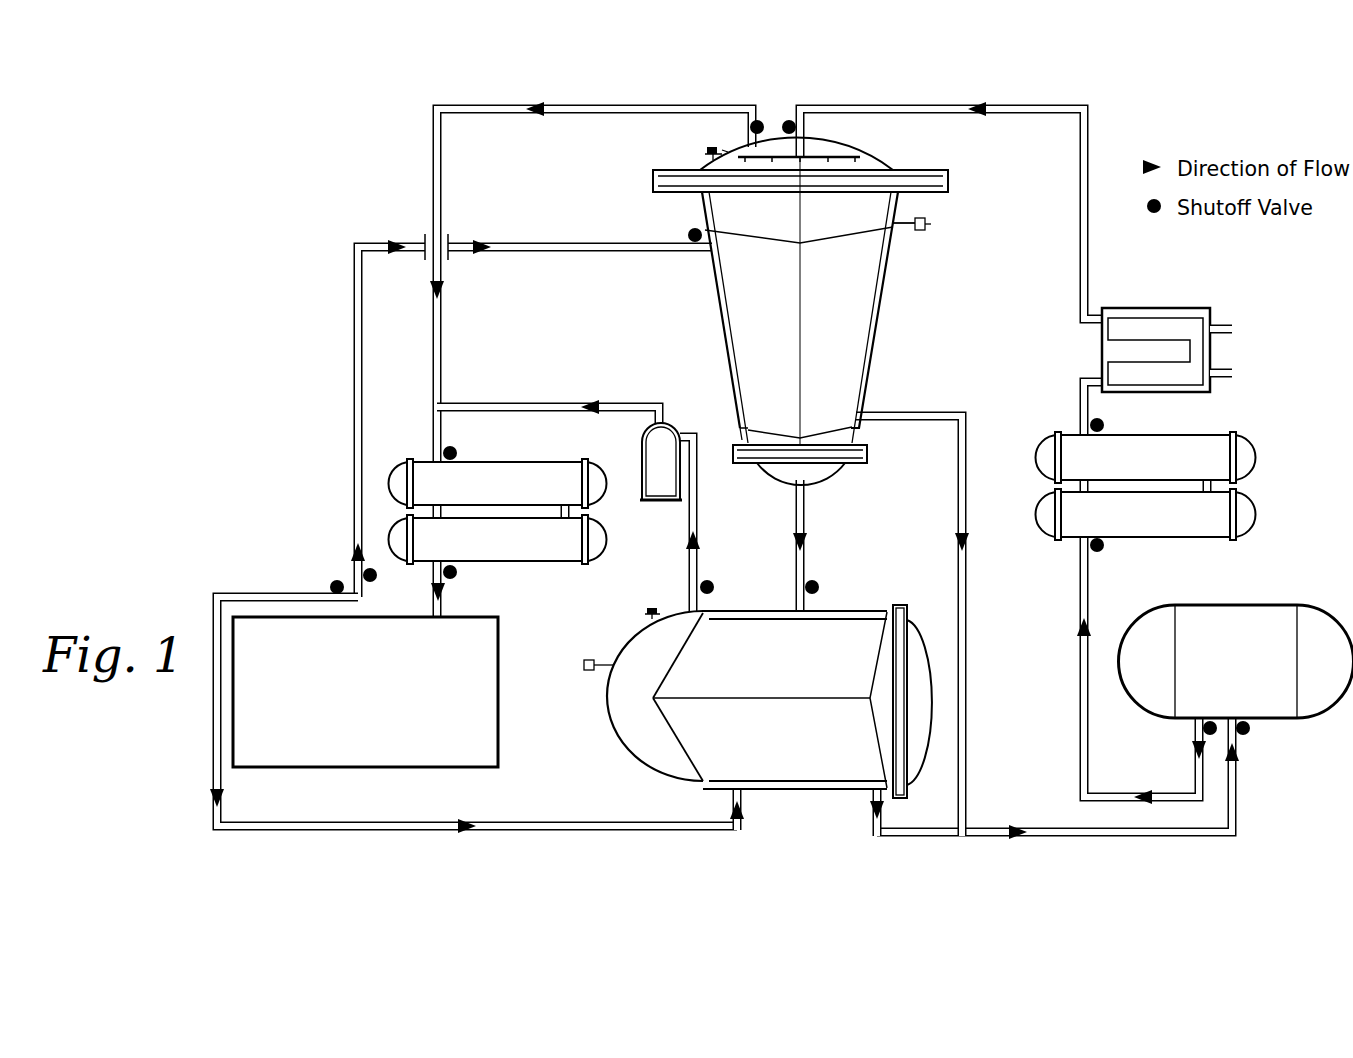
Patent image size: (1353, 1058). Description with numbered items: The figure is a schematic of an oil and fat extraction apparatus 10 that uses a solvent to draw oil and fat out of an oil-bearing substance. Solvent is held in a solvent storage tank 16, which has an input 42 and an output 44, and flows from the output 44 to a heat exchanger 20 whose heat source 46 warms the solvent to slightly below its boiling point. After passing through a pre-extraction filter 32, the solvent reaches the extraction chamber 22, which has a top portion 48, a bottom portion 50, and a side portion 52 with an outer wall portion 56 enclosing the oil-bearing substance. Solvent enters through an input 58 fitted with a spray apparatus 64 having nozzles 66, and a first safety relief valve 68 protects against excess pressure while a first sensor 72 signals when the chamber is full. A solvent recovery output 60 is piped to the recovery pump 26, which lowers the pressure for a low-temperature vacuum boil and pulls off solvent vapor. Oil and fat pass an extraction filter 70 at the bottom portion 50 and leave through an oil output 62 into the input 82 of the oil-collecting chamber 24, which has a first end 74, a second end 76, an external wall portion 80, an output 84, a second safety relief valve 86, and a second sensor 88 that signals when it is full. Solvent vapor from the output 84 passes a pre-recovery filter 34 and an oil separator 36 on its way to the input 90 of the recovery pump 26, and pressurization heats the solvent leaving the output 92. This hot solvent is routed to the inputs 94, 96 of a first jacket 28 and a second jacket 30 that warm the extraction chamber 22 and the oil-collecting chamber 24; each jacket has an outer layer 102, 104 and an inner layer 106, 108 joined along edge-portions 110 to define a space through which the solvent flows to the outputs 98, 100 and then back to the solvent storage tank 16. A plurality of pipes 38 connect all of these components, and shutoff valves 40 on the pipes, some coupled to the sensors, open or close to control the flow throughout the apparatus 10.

The oil and fat extraction apparatus 10 is at (182, 156).
The solvent storage tank 16 is at (1255, 612).
The heat exchanger 20 is at (1170, 308).
The extraction chamber 22 is at (807, 299).
The oil-collecting chamber 24 is at (760, 713).
The recovery pump 26 is at (498, 645).
The first jacket 28 is at (858, 335).
The second jacket 30 is at (843, 630).
The pre-extraction filter 32 is at (1255, 458).
The pre-recovery filter 34 is at (607, 530).
The oil separator 36 is at (647, 460).
The pipes 38 is at (353, 418).
The valves 40 is at (788, 120).
The input 42 is at (1233, 718).
The output 44 is at (1200, 718).
The heat source 46 is at (1232, 325).
The top portion 48 is at (833, 147).
The bottom portion 50 is at (822, 478).
The side portion 52 is at (899, 202).
The outer wall portion 56 is at (747, 225).
The input 58 is at (802, 112).
The solvent recovery output 60 is at (745, 141).
The oil output 62 is at (797, 500).
The spray apparatus 64 is at (845, 157).
The nozzles 66 is at (830, 165).
The first safety relief valve 68 is at (706, 153).
The extraction filter 70 is at (780, 472).
The first sensor 72 is at (924, 232).
The first end 74 is at (935, 700).
The second end 76 is at (612, 726).
The external wall portion 80 is at (642, 665).
The input 82 is at (800, 618).
The output 84 is at (704, 613).
The second safety relief valve 86 is at (651, 607).
The second sensor 88 is at (584, 666).
The input 90 is at (440, 625).
The output 92 is at (360, 625).
The input 94 is at (708, 247).
The input 96 is at (740, 785).
The output 98 is at (856, 413).
The output 100 is at (872, 782).
The outer layer 102 is at (742, 340).
The outer layer 104 is at (690, 738).
The inner layer 106 is at (746, 437).
The inner layer 108 is at (703, 782).
The edge-portions 110 is at (830, 243).